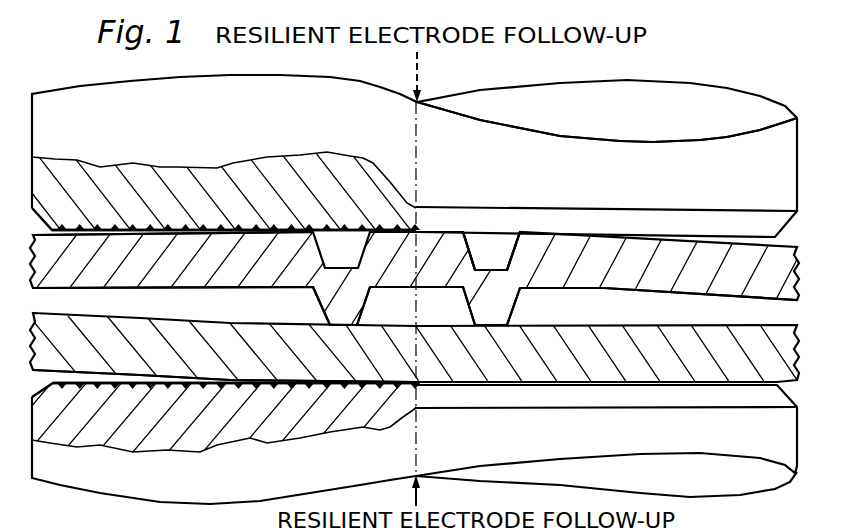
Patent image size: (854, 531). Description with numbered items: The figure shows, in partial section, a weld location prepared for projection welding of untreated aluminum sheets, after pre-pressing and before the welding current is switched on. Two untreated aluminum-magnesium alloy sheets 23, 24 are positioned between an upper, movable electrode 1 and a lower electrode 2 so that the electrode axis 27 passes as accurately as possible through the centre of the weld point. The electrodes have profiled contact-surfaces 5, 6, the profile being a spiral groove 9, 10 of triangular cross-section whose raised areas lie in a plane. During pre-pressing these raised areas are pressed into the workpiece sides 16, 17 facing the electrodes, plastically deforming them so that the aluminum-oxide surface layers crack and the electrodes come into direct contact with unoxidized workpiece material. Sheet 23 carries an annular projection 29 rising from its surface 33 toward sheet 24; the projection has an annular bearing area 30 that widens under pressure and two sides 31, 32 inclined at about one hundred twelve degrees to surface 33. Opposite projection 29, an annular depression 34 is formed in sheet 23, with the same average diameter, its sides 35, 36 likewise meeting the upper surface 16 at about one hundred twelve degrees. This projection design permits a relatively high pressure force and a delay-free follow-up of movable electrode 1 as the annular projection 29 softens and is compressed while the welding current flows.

The electrode 1 is at (217, 127).
The electrode 2 is at (168, 495).
The contact-surface 5 is at (374, 227).
The contact-surface 6 is at (368, 388).
The spiral groove 9 is at (60, 226).
The spiral groove 10 is at (59, 390).
The workpiece side 16 is at (100, 233).
The workpiece side 17 is at (84, 373).
The aluminum sheet 23 is at (660, 286).
The aluminum sheet 24 is at (577, 338).
The axis 27 is at (420, 137).
The annular projection 29 is at (505, 311).
The annular bearing area 30 is at (485, 322).
The side of projection 31 is at (323, 310).
The side of projection 32 is at (363, 307).
The surface of the sheet 33 is at (217, 287).
The annular depression 34 is at (491, 250).
The side of depression 35 is at (468, 243).
The side of depression 36 is at (512, 240).